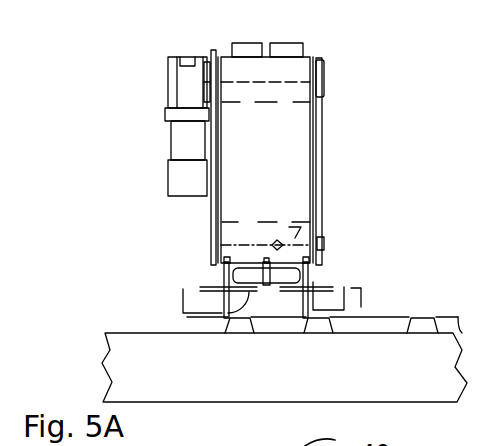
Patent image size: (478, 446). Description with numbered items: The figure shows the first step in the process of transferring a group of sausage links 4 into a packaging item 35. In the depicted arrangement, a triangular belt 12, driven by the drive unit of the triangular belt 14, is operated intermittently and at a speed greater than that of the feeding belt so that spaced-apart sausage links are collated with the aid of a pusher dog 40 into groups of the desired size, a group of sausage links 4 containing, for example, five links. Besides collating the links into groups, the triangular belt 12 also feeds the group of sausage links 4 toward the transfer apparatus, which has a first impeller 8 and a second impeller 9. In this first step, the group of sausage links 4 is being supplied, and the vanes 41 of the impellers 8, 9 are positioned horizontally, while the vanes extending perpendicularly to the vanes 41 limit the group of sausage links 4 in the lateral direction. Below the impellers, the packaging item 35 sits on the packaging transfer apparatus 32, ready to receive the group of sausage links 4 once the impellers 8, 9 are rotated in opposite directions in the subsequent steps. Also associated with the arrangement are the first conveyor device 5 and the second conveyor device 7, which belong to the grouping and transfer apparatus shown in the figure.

The group of sausage links 4 is at (252, 280).
The first conveyor device 5 is at (305, 287).
The second conveyor device 7 is at (227, 262).
The first impeller 8 is at (330, 267).
The second impeller 9 is at (213, 277).
The triangular belt 12 is at (338, 165).
The drive unit of the triangular belt 14 is at (190, 83).
The packaging transfer apparatus 32 is at (134, 324).
The packaging item 35 is at (385, 328).
The pusher dog 40 is at (292, 52).
The vane 41 is at (225, 318).